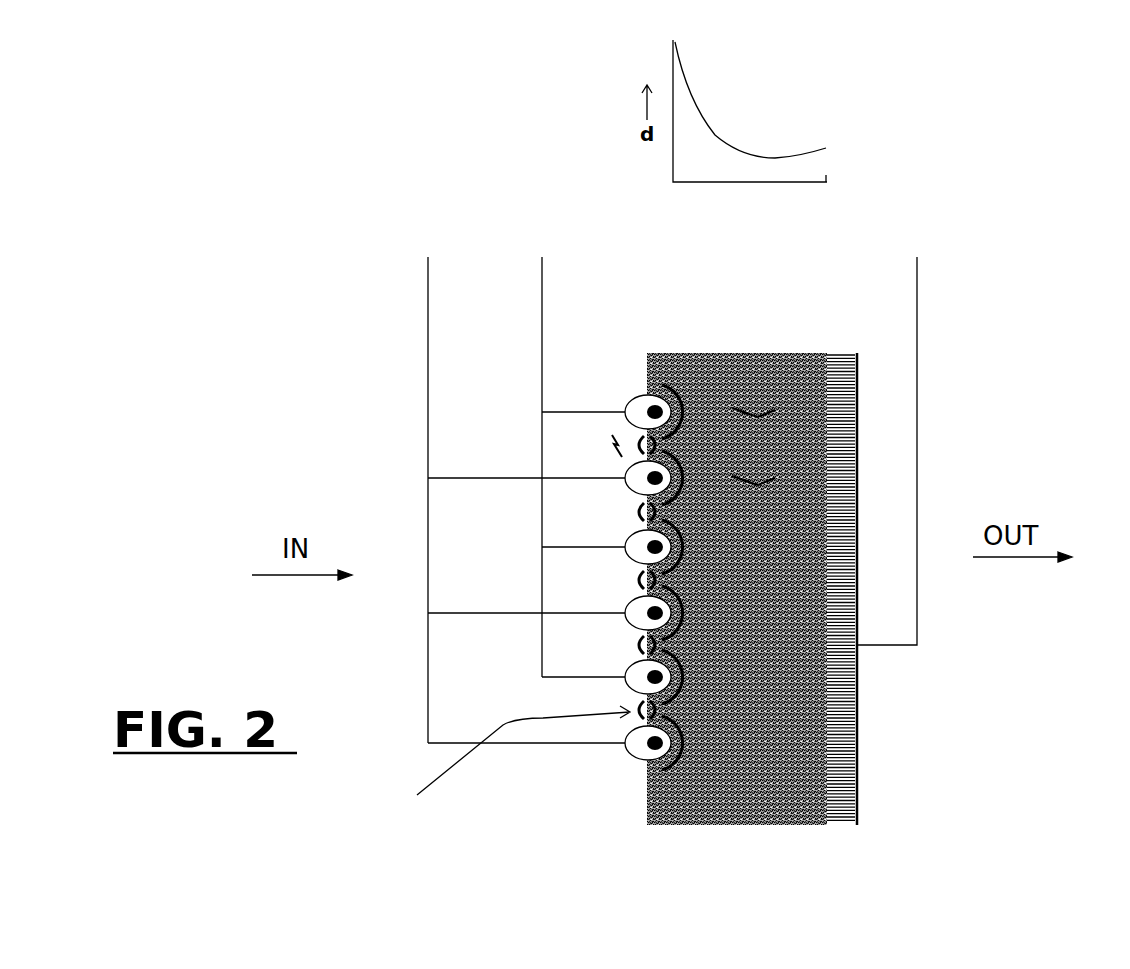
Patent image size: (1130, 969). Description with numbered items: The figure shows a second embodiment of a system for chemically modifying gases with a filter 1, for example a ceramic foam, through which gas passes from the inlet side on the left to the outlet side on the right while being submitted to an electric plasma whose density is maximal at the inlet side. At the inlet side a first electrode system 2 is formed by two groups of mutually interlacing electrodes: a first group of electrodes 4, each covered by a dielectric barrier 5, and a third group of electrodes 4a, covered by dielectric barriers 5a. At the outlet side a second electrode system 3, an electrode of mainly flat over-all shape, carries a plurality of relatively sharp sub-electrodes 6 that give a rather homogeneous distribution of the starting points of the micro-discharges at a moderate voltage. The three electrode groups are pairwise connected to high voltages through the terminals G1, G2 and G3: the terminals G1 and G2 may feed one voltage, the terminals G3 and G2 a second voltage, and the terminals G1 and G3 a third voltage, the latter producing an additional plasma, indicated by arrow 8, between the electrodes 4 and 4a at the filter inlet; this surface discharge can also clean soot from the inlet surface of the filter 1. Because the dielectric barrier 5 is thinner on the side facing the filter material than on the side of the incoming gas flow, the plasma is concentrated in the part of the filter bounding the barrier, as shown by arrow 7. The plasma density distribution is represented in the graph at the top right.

The filter 1 is at (758, 788).
The first electrode system 2 is at (593, 635).
The second electrode system 3 is at (860, 802).
The electrodes 4 is at (610, 611).
The electrodes 4a is at (606, 577).
The dielectric barrier 5 is at (597, 606).
The dielectric barriers 5a is at (619, 577).
The sub-electrodes 6 is at (837, 807).
The arrow 7 is at (695, 766).
The arrow 8 is at (507, 762).
The terminal G1 is at (587, 448).
The terminal G2 is at (892, 432).
The terminal G3 is at (527, 481).